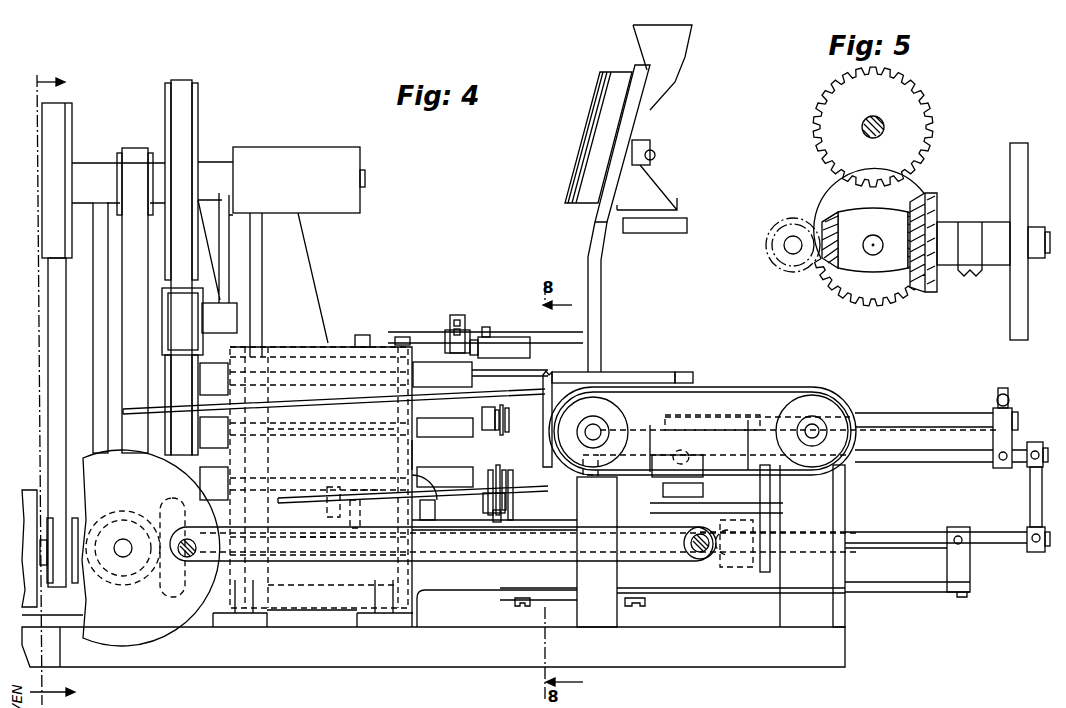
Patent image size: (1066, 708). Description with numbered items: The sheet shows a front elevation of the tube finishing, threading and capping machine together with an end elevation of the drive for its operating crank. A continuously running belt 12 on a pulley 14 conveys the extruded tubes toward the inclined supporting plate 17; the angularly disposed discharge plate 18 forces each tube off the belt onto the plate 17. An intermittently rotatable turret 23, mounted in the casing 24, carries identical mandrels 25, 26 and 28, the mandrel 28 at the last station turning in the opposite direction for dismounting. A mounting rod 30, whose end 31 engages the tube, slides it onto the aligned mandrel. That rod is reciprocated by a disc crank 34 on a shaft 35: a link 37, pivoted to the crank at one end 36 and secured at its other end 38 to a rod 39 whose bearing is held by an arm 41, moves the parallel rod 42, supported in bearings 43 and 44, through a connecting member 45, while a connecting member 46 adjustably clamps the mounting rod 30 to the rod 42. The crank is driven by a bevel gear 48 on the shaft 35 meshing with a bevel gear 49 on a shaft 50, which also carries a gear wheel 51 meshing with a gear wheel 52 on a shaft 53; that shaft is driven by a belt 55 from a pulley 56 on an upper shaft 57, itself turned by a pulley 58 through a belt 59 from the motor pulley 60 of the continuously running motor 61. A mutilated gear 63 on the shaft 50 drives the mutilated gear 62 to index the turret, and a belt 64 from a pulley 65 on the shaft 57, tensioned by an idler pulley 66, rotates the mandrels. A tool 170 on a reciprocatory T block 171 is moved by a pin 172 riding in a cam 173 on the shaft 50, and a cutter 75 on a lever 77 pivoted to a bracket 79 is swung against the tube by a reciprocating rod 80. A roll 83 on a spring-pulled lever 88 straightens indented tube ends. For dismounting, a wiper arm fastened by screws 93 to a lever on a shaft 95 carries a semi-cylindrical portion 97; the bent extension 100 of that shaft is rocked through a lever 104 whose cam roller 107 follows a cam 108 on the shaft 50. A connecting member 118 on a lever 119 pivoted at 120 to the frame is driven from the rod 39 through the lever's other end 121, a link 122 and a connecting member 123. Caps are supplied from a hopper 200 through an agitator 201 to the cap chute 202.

In FIG. 4, the belt 12 is at (760, 388).
In FIG. 4, the pulley 14 is at (838, 400).
In FIG. 4, the inclined supporting plate 17 is at (684, 372).
In FIG. 4, the discharge plate 18 is at (645, 372).
In FIG. 4, the turret 23 is at (413, 456).
In FIG. 4, the casing 24 is at (292, 347).
In FIG. 4, the mandrel 25 is at (466, 437).
In FIG. 4, the mandrel 26 is at (484, 478).
In FIG. 4, the mandrel 28 is at (553, 372).
In FIG. 4, the mounting rod 30 is at (918, 413).
In FIG. 4, the end of mounting rod 31 is at (665, 420).
In FIG. 4, the disc crank 34 is at (165, 637).
In FIG. 5, the disc crank 34 is at (1010, 162).
In FIG. 4, the shaft 35 is at (121, 557).
In FIG. 5, the shaft 35 is at (1045, 241).
In FIG. 4, the pivot end of crank 36 is at (184, 566).
In FIG. 4, the link 37 is at (472, 561).
In FIG. 4, the end of link 38 is at (692, 553).
In FIG. 4, the rod 39 is at (885, 532).
In FIG. 4, the arm 41 is at (770, 488).
In FIG. 4, the parallel rod 42 is at (933, 462).
In FIG. 4, the bearing 43 is at (748, 440).
In FIG. 4, the bearing 44 is at (674, 440).
In FIG. 4, the connecting member 45 is at (1030, 500).
In FIG. 4, the connecting member 46 is at (997, 402).
In FIG. 4, the bevel gear 48 is at (115, 510).
In FIG. 5, the bevel gear 48 is at (932, 201).
In FIG. 4, the bevel gear 49 is at (165, 498).
In FIG. 5, the bevel gear 49 is at (845, 263).
In FIG. 4, the shaft 50 is at (311, 536).
In FIG. 5, the shaft 50 is at (873, 235).
In FIG. 5, the gear wheel 51 is at (838, 212).
In FIG. 5, the gear wheel 52 is at (814, 268).
In FIG. 5, the shaft 53 is at (793, 245).
In FIG. 4, the belt 55 is at (135, 148).
In FIG. 4, the pulley 56 is at (118, 160).
In FIG. 4, the upper shaft 57 is at (365, 178).
In FIG. 4, the pulley 58 is at (72, 110).
In FIG. 4, the belt 59 is at (62, 142).
In FIG. 4, the motor pulley 60 is at (52, 584).
In FIG. 4, the motor 61 is at (28, 490).
In FIG. 4, the mutilated gear 62 is at (270, 416).
In FIG. 5, the mutilated gear 62 is at (903, 80).
In FIG. 4, the mutilated gear 63 is at (270, 588).
In FIG. 5, the mutilated gear 63 is at (849, 297).
In FIG. 4, the belt 64 is at (179, 82).
In FIG. 4, the pulley 65 is at (165, 102).
In FIG. 4, the idler pulley 66 is at (182, 321).
In FIG. 4, the cutter 75 is at (484, 502).
In FIG. 4, the lever 77 is at (497, 515).
In FIG. 4, the bracket 79 is at (540, 488).
In FIG. 4, the rod 80 is at (556, 486).
In FIG. 4, the roll 83 is at (482, 409).
In FIG. 4, the lever 88 is at (507, 412).
In FIG. 4, the screws 93 is at (464, 315).
In FIG. 4, the shaft 95 is at (565, 332).
In FIG. 4, the semi-cylindrical portion 97 is at (513, 337).
In FIG. 4, the shaft extension 100 is at (378, 333).
In FIG. 4, the lever 104 is at (334, 486).
In FIG. 4, the cam roller 107 is at (368, 488).
In FIG. 4, the cam 108 is at (366, 498).
In FIG. 4, the connecting member 118 is at (505, 592).
In FIG. 4, the lever 119 is at (548, 600).
In FIG. 4, the pivot 120 is at (567, 588).
In FIG. 4, the end of lever 121 is at (646, 599).
In FIG. 4, the link 122 is at (896, 593).
In FIG. 4, the connecting member 123 is at (947, 565).
In FIG. 4, the tool 170 is at (584, 486).
In FIG. 4, the T block 171 is at (717, 502).
In FIG. 4, the pin 172 is at (781, 503).
In FIG. 4, the cam 173 is at (727, 568).
In FIG. 4, the hopper 200 is at (692, 50).
In FIG. 4, the agitator 201 is at (596, 105).
In FIG. 4, the cap chute 202 is at (603, 277).